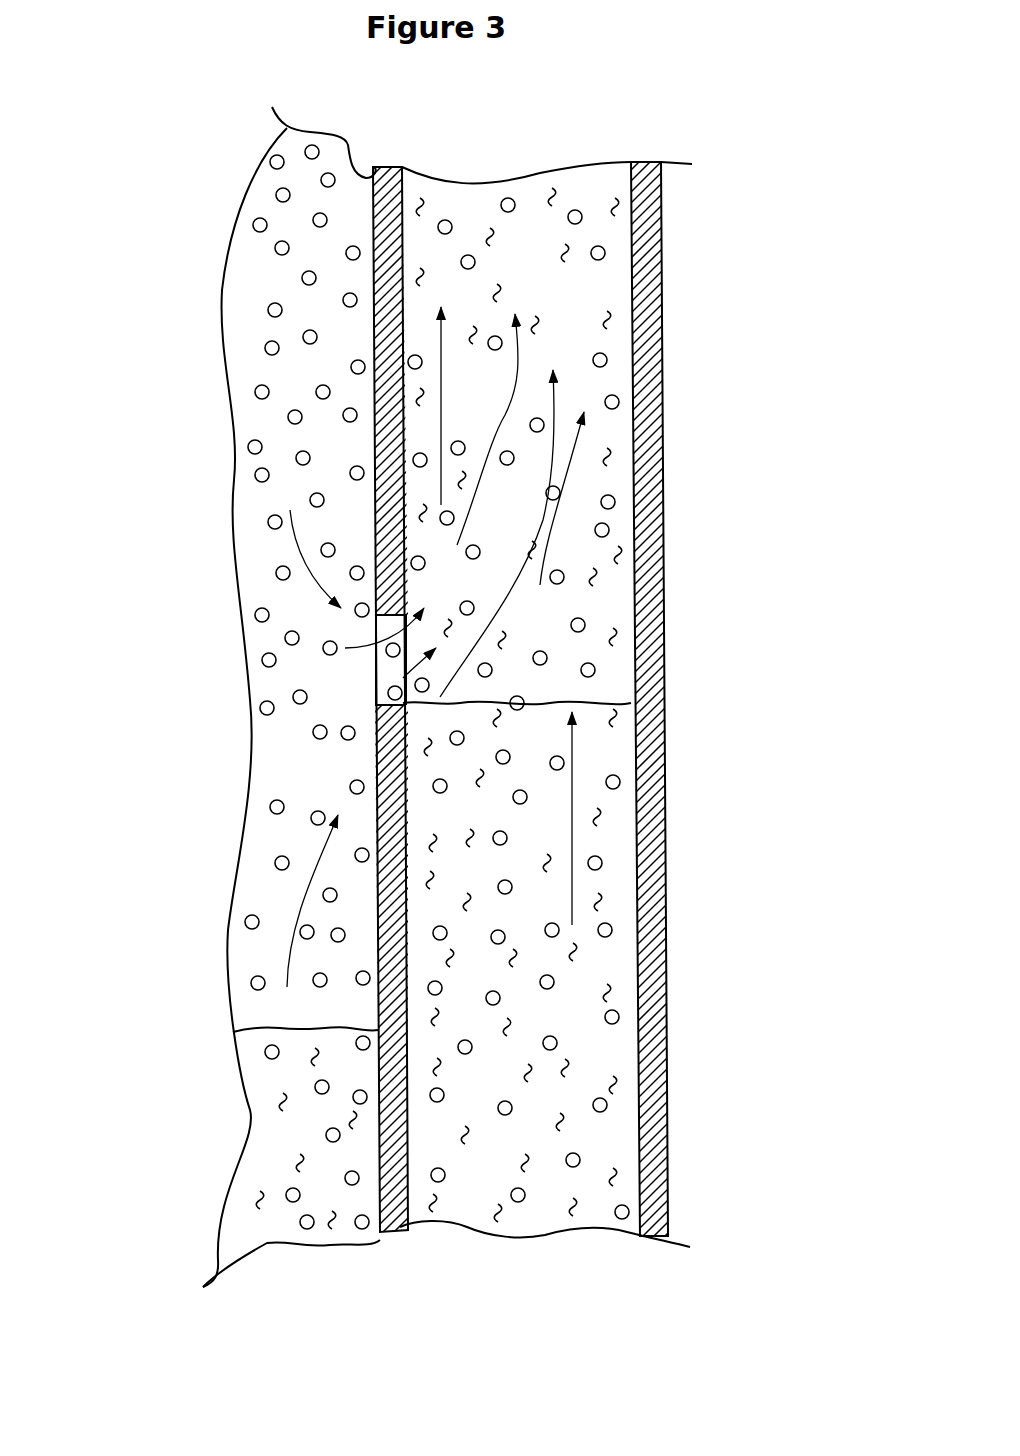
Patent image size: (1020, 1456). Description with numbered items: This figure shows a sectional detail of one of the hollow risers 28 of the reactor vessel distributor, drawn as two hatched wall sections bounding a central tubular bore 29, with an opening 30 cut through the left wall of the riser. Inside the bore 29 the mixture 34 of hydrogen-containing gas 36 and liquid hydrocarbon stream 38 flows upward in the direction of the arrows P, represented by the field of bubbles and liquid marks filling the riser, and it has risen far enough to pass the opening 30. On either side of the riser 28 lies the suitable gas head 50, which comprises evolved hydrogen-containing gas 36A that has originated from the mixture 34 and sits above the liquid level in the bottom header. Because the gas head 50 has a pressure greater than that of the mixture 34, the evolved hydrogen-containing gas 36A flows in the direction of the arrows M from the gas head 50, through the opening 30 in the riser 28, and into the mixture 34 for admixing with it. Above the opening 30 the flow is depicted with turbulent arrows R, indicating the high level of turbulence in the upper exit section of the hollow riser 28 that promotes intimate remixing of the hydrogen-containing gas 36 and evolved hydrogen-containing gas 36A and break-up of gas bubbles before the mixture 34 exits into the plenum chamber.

The hollow riser 28 is at (383, 185).
The tubular bore 29 is at (626, 1063).
The opening 30 is at (387, 660).
The mixture 34 is at (612, 590).
The hydrogen-containing gas 36 is at (615, 933).
The evolved hydrogen-containing gas 36A is at (511, 198).
The liquid hydrocarbon stream 38 is at (618, 638).
The suitable gas head 50 is at (266, 278).
The arrows P is at (437, 347).
The arrows M is at (397, 637).
The turbulent arrows R is at (590, 418).